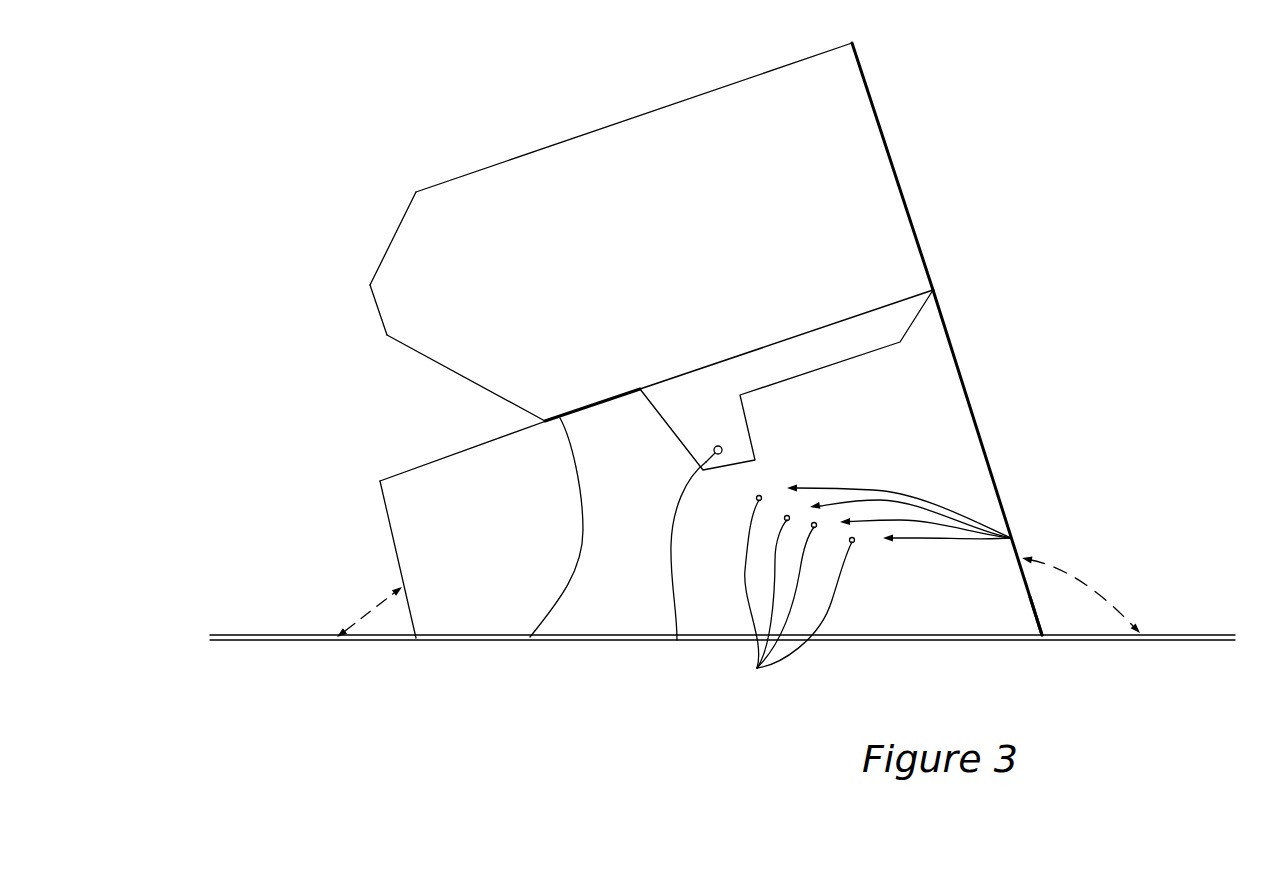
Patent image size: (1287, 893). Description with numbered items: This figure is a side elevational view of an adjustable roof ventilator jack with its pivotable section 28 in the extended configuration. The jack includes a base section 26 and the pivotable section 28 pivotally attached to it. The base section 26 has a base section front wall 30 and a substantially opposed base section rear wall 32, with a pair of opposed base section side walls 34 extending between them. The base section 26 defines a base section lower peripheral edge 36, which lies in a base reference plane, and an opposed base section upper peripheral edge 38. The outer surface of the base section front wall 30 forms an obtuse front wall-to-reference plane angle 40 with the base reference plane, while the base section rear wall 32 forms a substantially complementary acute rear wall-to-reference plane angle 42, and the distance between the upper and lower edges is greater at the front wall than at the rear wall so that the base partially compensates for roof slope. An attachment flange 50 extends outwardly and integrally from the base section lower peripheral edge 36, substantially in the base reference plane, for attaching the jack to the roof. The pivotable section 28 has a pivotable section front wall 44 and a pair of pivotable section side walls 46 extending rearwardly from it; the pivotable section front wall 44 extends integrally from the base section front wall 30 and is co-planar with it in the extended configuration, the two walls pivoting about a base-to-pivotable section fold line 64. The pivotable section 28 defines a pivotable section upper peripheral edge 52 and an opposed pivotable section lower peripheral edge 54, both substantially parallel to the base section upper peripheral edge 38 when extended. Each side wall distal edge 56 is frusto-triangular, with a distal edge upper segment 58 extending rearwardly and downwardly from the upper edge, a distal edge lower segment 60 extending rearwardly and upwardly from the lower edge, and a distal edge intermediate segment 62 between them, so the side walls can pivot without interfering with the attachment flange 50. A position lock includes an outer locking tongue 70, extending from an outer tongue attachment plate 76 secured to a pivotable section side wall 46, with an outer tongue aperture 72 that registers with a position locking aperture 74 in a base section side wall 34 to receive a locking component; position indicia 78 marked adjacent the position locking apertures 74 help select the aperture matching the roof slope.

The base section 26 is at (876, 495).
The pivotable section 28 is at (645, 232).
The base section front wall 30 is at (975, 420).
The base section rear wall 32 is at (397, 557).
The base section side walls 34 is at (963, 505).
The base section lower peripheral edge 36 is at (1044, 634).
The base section upper peripheral edge 38 is at (430, 550).
The front wall-to-reference plane angle 40 is at (1107, 600).
The rear wall-to-reference plane angle 42 is at (385, 592).
The pivotable section front wall 44 is at (898, 187).
The pivotable section side walls 46 is at (827, 123).
The attachment flange 50 is at (1200, 636).
The pivotable section upper peripheral edge 52 is at (550, 146).
The pivotable section lower peripheral edge 54 is at (530, 637).
The side wall distal edge 56 is at (318, 304).
The distal edge upper segment 58 is at (392, 240).
The distal edge lower segment 60 is at (415, 353).
The distal edge intermediate segment 62 is at (374, 312).
The base-to-pivotable section fold line 64 is at (933, 292).
The outer locking tongue 70 is at (737, 427).
The outer tongue aperture 72 is at (677, 640).
The position locking aperture 74 is at (757, 668).
The outer tongue attachment plate 76 is at (893, 322).
The position indicia 78 is at (1011, 538).